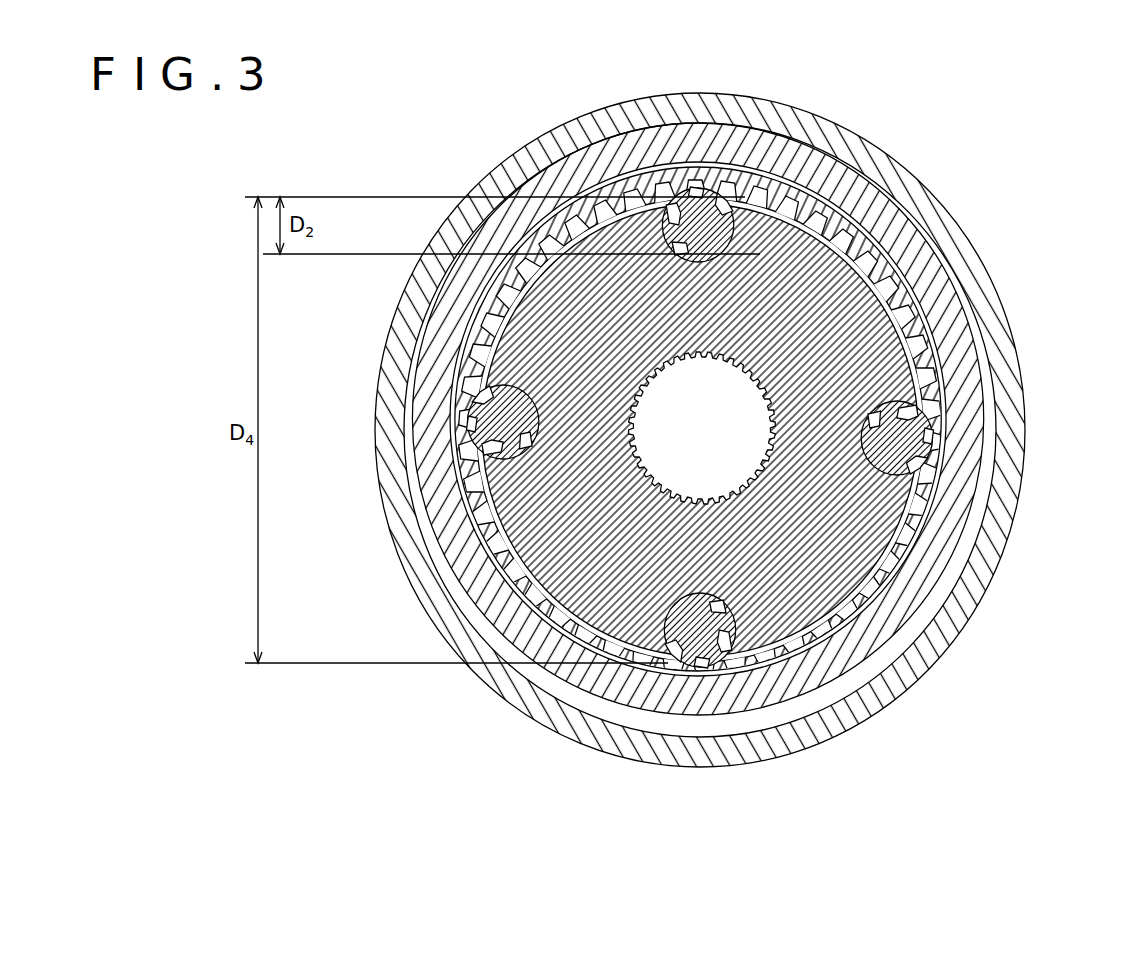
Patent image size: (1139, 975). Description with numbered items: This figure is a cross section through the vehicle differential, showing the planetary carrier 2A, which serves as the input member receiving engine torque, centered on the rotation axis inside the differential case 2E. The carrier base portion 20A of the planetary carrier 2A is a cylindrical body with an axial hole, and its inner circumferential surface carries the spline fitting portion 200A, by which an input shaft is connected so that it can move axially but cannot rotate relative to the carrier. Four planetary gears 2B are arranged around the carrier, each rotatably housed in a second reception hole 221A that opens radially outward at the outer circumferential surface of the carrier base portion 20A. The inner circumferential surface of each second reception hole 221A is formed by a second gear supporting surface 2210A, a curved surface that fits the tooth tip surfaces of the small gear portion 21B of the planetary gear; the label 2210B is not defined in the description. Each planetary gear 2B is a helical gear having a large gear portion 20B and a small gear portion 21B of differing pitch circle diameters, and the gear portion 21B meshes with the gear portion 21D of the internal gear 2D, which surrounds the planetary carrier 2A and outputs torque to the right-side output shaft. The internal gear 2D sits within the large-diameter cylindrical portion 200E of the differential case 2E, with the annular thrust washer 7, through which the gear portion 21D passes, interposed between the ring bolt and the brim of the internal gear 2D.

The planetary carrier 2A is at (902, 380).
The planetary gears 2B is at (729, 203).
The internal gear 2D is at (905, 255).
The differential case 2E is at (1002, 252).
The thrust washer 7 is at (875, 192).
The carrier base portion 20A is at (500, 328).
The gear portion 20B is at (680, 196).
The gear portion 21B is at (733, 222).
The gear portion 21D is at (905, 605).
The spline fitting portion 200A is at (650, 378).
The large-diameter cylindrical portion 200E is at (777, 123).
The second reception hole 221A is at (735, 205).
The second gear supporting surface 2210A is at (667, 212).
The recess 2210B is at (470, 397).